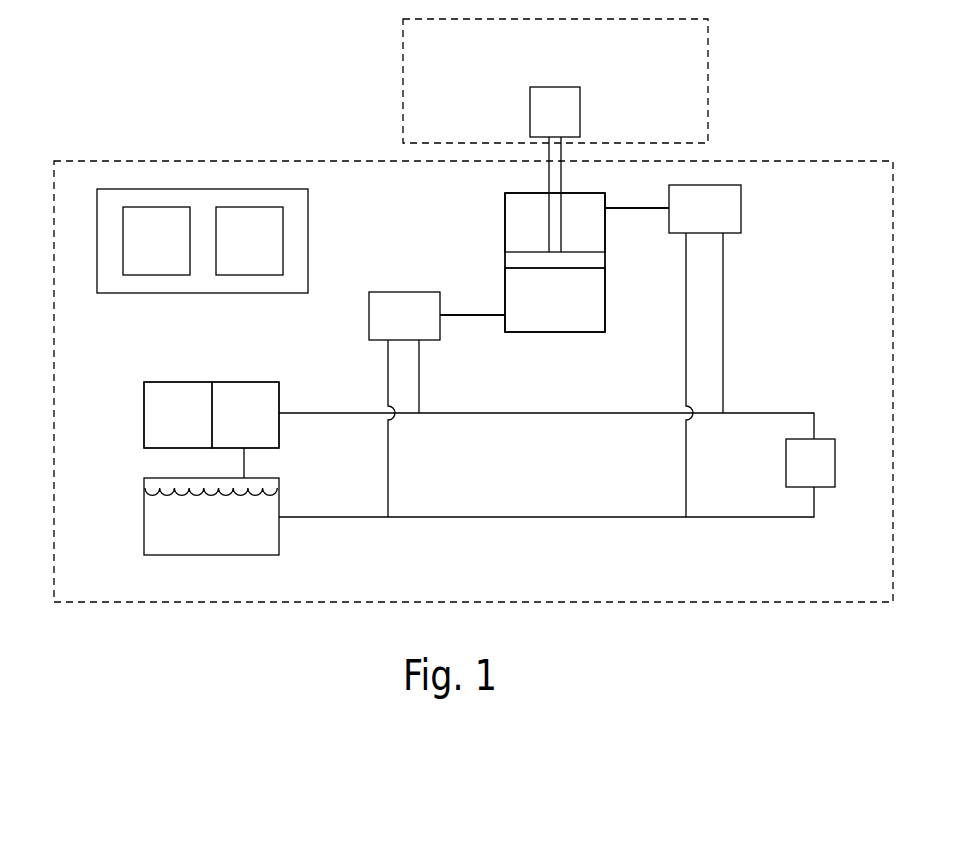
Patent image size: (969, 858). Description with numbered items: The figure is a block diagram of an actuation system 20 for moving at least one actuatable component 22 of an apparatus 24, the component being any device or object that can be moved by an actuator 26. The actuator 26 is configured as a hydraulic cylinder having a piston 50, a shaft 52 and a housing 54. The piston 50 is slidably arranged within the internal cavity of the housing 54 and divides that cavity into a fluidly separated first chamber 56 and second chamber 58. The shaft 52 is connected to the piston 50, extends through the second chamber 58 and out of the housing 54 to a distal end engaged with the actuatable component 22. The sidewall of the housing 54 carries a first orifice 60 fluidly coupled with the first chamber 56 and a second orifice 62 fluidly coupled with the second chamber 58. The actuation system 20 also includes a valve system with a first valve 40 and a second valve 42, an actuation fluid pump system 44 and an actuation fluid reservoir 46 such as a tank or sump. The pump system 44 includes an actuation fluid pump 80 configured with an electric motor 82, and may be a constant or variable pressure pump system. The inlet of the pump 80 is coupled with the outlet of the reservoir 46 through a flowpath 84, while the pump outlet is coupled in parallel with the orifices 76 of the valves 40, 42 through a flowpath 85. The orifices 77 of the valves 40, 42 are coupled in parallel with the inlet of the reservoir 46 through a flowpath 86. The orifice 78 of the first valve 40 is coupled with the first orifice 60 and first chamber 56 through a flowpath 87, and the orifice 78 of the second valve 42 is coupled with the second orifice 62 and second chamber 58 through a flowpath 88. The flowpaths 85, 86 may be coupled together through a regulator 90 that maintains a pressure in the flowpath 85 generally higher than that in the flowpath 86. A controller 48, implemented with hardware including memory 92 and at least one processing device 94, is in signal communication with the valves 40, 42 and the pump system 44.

The actuation system 20 is at (824, 150).
The actuatable component 22 is at (541, 125).
The apparatus 24 is at (712, 42).
The actuator 26 is at (495, 228).
The first valve 40 is at (390, 327).
The second valve 42 is at (691, 220).
The actuation fluid pump system 44 is at (214, 370).
The actuation fluid reservoir 46 is at (197, 531).
The controller 48 is at (162, 305).
The piston 50 is at (604, 260).
The shaft 52 is at (563, 172).
The housing 54 is at (607, 288).
The first chamber 56 is at (539, 310).
The second chamber 58 is at (564, 237).
The first orifice 60 is at (505, 322).
The second orifice 62 is at (607, 207).
The valve orifice 76 is at (420, 342).
The valve orifice 77 is at (388, 342).
The valve orifice 78 is at (443, 307).
The actuation fluid pump 80 is at (231, 428).
The electric motor 82 is at (164, 428).
The flowpath 84 is at (246, 460).
The flowpath 85 is at (497, 415).
The flowpath 86 is at (497, 519).
The flowpath 87 is at (475, 312).
The flowpath 88 is at (650, 210).
The regulator 90 is at (796, 474).
The memory 92 is at (143, 253).
The processing device 94 is at (236, 253).